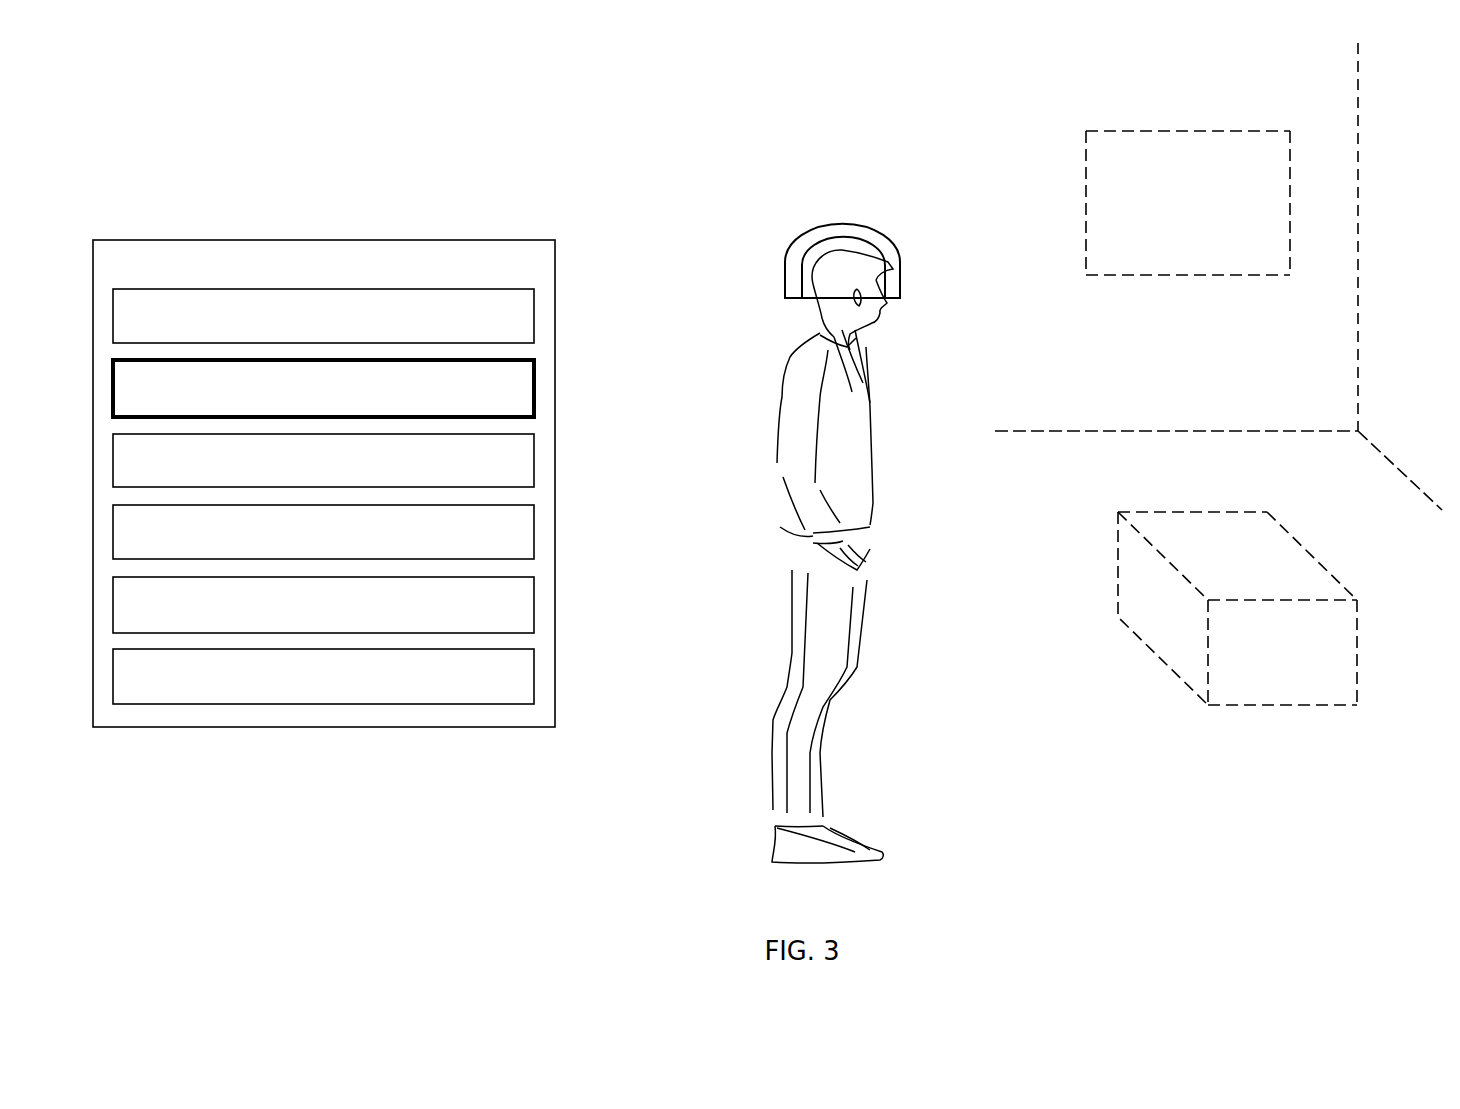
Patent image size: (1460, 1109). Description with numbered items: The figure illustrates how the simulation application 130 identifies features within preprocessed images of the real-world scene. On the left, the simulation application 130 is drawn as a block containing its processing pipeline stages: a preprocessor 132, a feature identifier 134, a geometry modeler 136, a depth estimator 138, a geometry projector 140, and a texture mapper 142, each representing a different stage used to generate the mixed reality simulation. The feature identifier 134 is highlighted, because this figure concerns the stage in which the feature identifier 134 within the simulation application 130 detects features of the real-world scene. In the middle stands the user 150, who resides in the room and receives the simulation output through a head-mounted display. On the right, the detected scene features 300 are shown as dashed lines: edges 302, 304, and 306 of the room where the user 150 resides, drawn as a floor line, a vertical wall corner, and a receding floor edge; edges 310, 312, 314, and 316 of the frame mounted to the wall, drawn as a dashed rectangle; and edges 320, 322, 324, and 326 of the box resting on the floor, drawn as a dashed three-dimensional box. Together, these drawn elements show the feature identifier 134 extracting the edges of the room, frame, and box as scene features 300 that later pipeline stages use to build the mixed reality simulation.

The simulation application 130 is at (502, 281).
The preprocessor 132 is at (447, 331).
The feature identifier 134 is at (470, 402).
The geometry modeler 136 is at (477, 474).
The depth estimator 138 is at (460, 546).
The geometry projector 140 is at (492, 619).
The texture mapper 142 is at (455, 691).
The user 150 is at (777, 418).
The scene features 300 is at (864, 136).
The edge 302 is at (1198, 431).
The edge 304 is at (1358, 283).
The edge 306 is at (1375, 451).
The edge 310 is at (1208, 131).
The edge 312 is at (1290, 192).
The edge 314 is at (1188, 276).
The edge 316 is at (1086, 187).
The edge 320 is at (1193, 512).
The edge 322 is at (1329, 572).
The edge 324 is at (1293, 706).
The edge 326 is at (1178, 566).